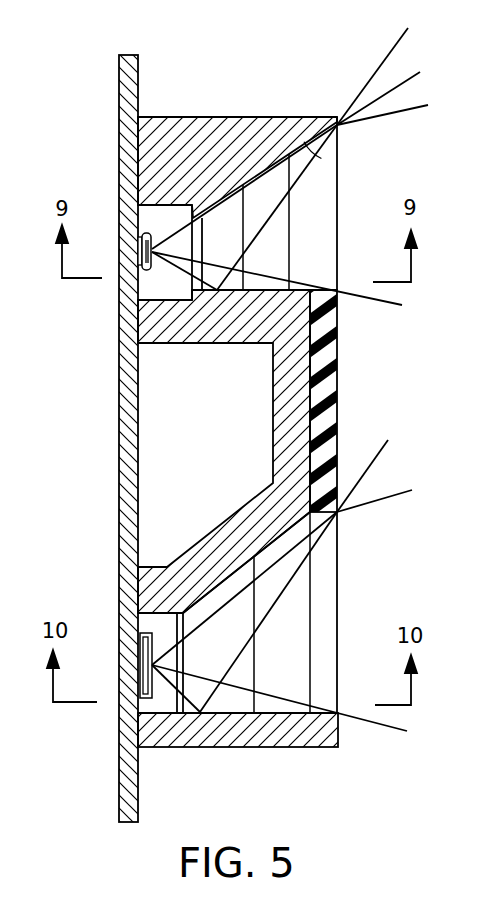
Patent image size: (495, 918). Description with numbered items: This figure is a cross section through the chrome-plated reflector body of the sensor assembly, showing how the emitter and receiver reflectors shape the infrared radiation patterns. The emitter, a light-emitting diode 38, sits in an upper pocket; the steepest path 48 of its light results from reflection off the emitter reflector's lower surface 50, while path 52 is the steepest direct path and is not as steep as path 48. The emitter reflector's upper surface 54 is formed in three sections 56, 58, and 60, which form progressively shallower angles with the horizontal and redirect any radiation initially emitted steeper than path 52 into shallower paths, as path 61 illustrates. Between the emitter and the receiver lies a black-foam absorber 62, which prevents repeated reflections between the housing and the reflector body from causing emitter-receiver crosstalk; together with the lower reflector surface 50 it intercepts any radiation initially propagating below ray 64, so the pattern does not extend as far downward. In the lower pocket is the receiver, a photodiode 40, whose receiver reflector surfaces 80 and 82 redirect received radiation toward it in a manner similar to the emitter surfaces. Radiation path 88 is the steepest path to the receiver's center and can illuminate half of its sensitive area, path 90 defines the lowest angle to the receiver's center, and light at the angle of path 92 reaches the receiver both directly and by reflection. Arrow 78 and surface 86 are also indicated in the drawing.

The light-emitting diode 38 is at (140, 243).
The photodiode 40 is at (140, 684).
The steepest path 48 is at (387, 53).
The lower surface 50 is at (298, 288).
The steepest direct path 52 is at (413, 78).
The upper surface 54 is at (324, 173).
The first upper-surface section 56 is at (235, 204).
The second upper-surface section 58 is at (243, 184).
The third upper-surface section 60 is at (323, 159).
The path 61 is at (408, 115).
The black-foam absorber 62 is at (338, 363).
The ray 64 is at (391, 304).
The light path 78 is at (318, 626).
The receiver reflector surface 80 is at (220, 583).
The receiver reflector surface 82 is at (274, 541).
The entrance surface 86 is at (297, 713).
The radiation path 88 is at (385, 448).
The path 90 is at (398, 726).
The path 92 is at (398, 492).